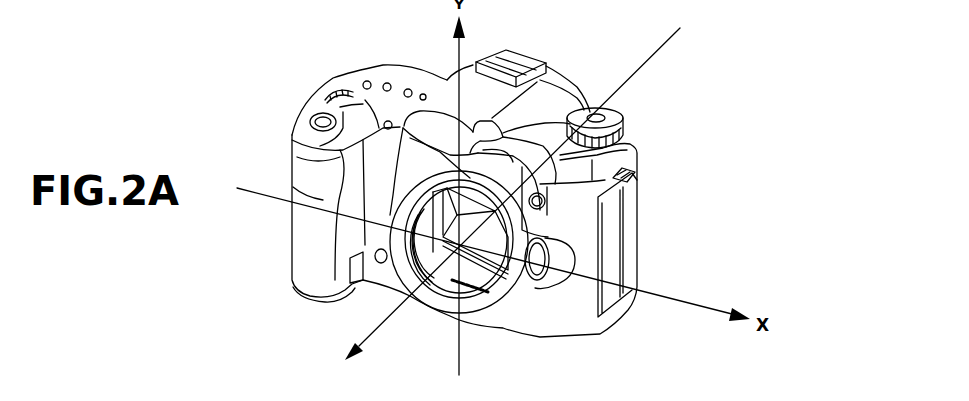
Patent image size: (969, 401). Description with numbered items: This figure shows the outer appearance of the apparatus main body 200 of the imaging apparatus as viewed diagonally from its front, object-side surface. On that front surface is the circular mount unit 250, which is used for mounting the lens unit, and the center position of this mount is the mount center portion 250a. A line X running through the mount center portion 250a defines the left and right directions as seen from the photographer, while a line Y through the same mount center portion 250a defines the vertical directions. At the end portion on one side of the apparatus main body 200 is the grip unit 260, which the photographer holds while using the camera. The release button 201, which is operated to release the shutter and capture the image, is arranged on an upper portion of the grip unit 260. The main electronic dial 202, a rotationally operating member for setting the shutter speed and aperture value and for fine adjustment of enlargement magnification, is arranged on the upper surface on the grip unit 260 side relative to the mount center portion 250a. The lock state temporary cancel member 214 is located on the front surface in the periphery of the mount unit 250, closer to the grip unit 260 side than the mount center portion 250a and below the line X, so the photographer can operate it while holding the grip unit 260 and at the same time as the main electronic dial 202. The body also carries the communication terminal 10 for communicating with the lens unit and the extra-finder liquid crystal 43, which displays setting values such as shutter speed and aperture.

The communication terminal 10 is at (477, 292).
The extra-finder liquid crystal 43 is at (383, 82).
The apparatus main body 200 is at (572, 71).
The release button 201 is at (310, 114).
The main electronic dial 202 is at (330, 86).
The lock state temporary cancel member 214 is at (360, 247).
The mount unit 250 is at (495, 303).
The mount center portion 250a is at (553, 255).
The grip unit 260 is at (300, 224).